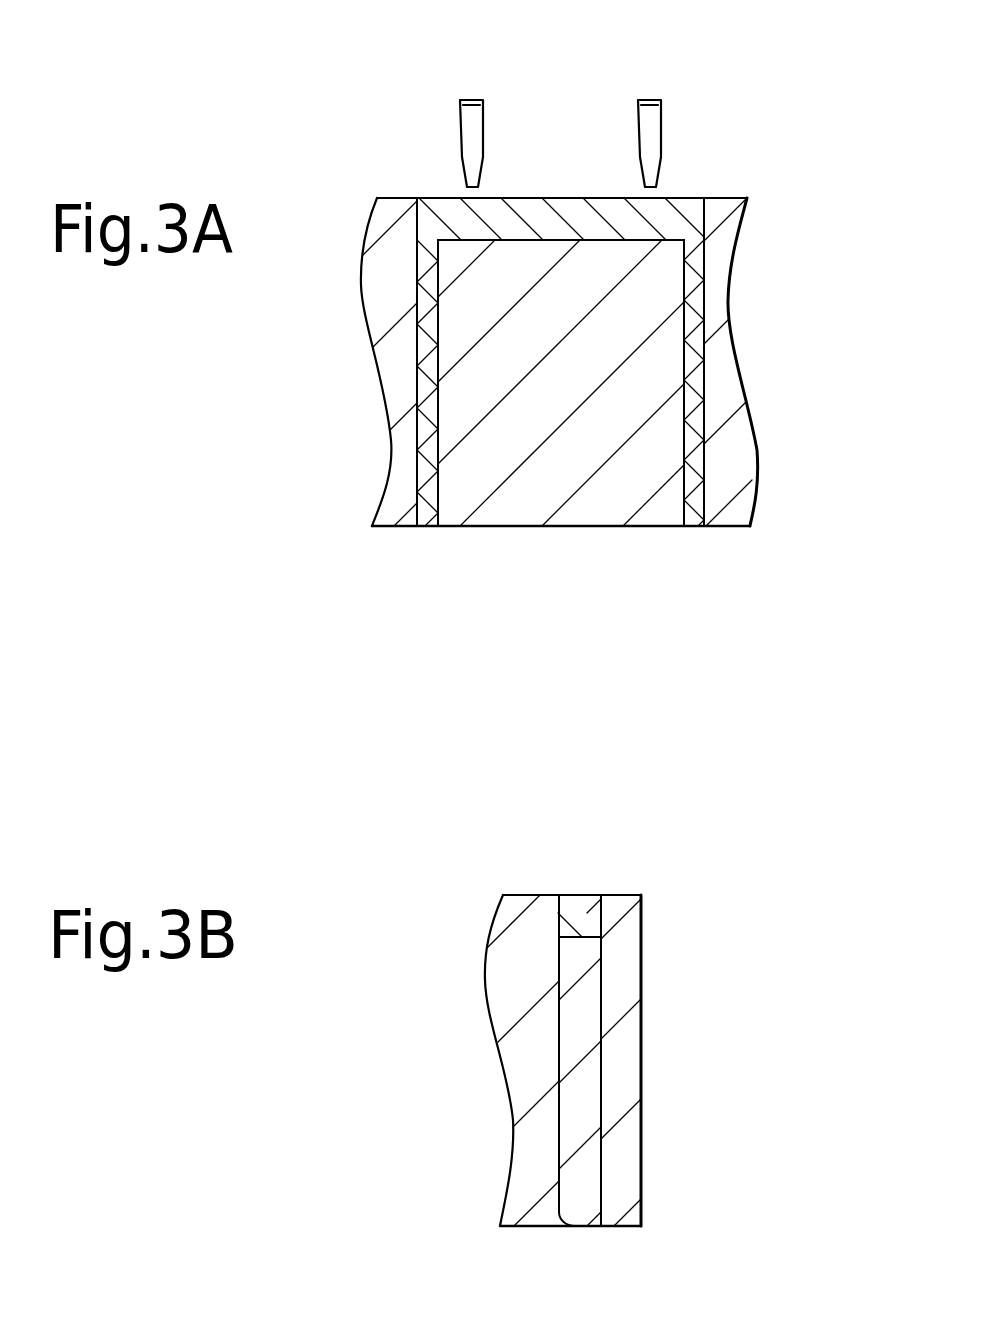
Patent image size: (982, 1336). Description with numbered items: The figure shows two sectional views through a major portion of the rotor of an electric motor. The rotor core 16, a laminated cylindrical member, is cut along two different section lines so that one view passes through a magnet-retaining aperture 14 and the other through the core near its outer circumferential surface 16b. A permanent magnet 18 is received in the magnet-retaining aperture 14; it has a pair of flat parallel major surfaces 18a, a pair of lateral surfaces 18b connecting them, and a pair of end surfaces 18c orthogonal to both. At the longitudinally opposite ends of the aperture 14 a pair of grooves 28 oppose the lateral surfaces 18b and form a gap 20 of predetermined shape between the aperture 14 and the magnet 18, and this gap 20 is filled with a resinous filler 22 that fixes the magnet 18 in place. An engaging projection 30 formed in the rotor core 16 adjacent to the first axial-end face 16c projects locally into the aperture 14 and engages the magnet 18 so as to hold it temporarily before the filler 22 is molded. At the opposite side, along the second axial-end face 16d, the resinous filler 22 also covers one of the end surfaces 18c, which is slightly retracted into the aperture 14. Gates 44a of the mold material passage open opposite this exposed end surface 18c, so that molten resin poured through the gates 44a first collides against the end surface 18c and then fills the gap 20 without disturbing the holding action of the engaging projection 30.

In FIG. 3A, the magnet-retaining aperture 14 is at (455, 218).
In FIG. 3B, the magnet-retaining aperture 14 is at (582, 912).
In FIG. 3A, the rotor core 16 is at (733, 192).
In FIG. 3B, the rotor core 16 is at (512, 977).
In FIG. 3B, the outer circumferential surface 16b is at (641, 980).
In FIG. 3A, the first axial-end face 16c is at (722, 527).
In FIG. 3B, the first axial-end face 16c is at (620, 1228).
In FIG. 3A, the second axial-end face 16d is at (378, 198).
In FIG. 3B, the second axial-end face 16d is at (622, 893).
In FIG. 3A, the permanent magnet 18 is at (512, 505).
In FIG. 3B, the permanent magnet 18 is at (592, 1090).
In FIG. 3B, the major surfaces 18a is at (559, 1028).
In FIG. 3A, the lateral surfaces 18b is at (433, 435).
In FIG. 3A, the end surfaces 18c is at (543, 238).
In FIG. 3A, the gap 20 is at (427, 352).
In FIG. 3A, the resinous filler 22 is at (693, 290).
In FIG. 3B, the resinous filler 22 is at (570, 903).
In FIG. 3A, the grooves 28 is at (700, 372).
In FIG. 3B, the engaging projection 30 is at (573, 1230).
In FIG. 3A, the gates 44a is at (480, 182).